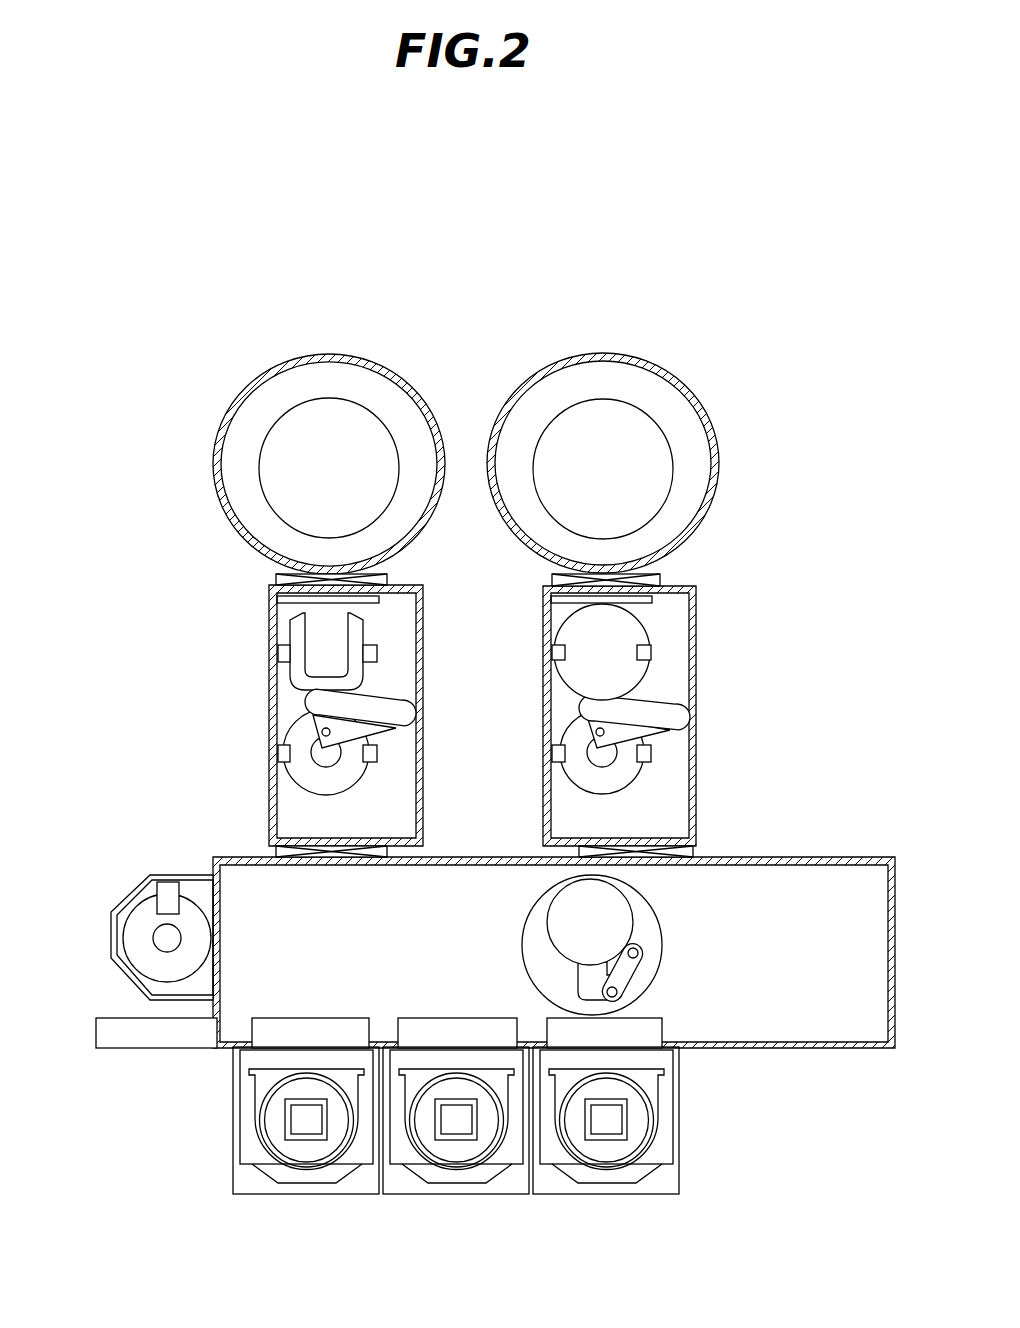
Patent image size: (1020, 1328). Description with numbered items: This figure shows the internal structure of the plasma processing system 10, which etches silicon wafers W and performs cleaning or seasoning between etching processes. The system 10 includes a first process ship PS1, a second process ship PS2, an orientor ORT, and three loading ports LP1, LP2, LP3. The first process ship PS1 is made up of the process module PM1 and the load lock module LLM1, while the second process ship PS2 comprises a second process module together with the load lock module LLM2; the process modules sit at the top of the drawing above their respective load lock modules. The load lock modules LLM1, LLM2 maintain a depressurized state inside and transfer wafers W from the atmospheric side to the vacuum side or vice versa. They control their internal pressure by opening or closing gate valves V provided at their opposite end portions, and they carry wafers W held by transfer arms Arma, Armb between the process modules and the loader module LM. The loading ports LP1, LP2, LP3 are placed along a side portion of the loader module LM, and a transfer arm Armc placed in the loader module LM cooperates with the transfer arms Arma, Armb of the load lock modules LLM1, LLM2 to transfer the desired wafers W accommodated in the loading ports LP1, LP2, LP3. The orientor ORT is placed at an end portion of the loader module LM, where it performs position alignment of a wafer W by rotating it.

The plasma processing system 10 is at (575, 243).
The first process ship PS1 is at (175, 546).
The second process ship PS2 is at (798, 541).
The process module PM1 is at (233, 403).
The load lock module LLM1 is at (270, 627).
The load lock module LLM2 is at (695, 642).
The transfer arm Arma is at (318, 704).
The transfer arm Armb is at (672, 716).
The transfer arm Armc is at (638, 967).
The loader module LM is at (838, 857).
The orientor ORT is at (130, 893).
The loading port LP1 is at (308, 1195).
The loading port LP2 is at (458, 1195).
The loading port LP3 is at (608, 1195).
The gate valve V is at (272, 577).
The wafer W is at (558, 630).